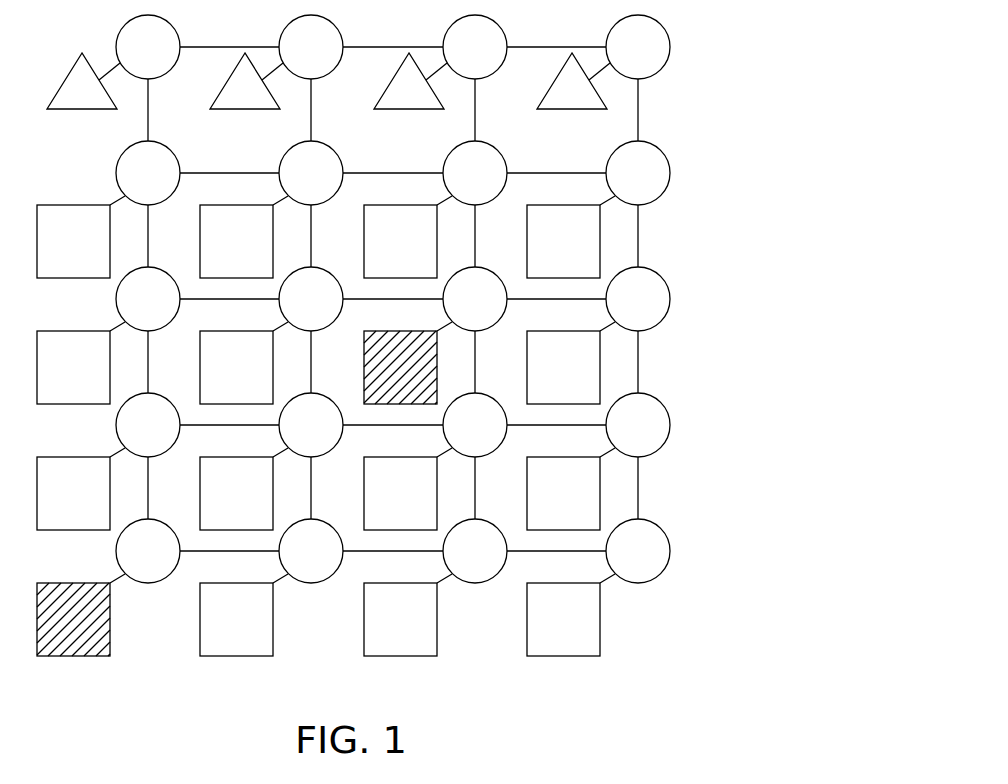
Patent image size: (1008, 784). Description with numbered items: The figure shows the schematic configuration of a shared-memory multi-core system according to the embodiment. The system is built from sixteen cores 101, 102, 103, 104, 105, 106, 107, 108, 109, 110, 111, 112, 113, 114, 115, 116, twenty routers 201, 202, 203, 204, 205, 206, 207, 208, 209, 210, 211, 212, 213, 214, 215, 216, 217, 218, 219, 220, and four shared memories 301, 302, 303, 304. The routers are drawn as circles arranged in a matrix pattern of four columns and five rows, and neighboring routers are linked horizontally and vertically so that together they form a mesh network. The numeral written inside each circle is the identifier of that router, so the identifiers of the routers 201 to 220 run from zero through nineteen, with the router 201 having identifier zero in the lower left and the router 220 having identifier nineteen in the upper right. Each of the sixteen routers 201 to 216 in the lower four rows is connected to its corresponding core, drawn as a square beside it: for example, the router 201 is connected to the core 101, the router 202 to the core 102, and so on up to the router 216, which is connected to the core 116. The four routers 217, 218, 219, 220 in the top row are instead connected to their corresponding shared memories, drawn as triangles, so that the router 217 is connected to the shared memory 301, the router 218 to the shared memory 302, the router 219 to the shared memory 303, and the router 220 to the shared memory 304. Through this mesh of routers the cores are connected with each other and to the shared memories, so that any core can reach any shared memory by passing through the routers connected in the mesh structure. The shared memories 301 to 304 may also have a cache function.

The core 101 is at (71, 656).
The core 102 is at (234, 656).
The core 103 is at (398, 656).
The core 104 is at (561, 656).
The core 105 is at (73, 457).
The core 106 is at (214, 457).
The core 107 is at (378, 457).
The core 108 is at (541, 457).
The core 109 is at (73, 331).
The core 110 is at (214, 331).
The core 111 is at (378, 331).
The core 112 is at (541, 331).
The core 113 is at (73, 205).
The core 114 is at (214, 205).
The core 115 is at (378, 205).
The core 116 is at (541, 205).
The router 201 is at (171, 574).
The router 202 is at (334, 574).
The router 203 is at (498, 574).
The router 204 is at (661, 574).
The router 205 is at (171, 448).
The router 206 is at (334, 448).
The router 207 is at (498, 448).
The router 208 is at (661, 448).
The router 209 is at (171, 322).
The router 210 is at (334, 322).
The router 211 is at (498, 322).
The router 212 is at (661, 322).
The router 213 is at (171, 196).
The router 214 is at (334, 196).
The router 215 is at (498, 196).
The router 216 is at (661, 196).
The router 217 is at (171, 70).
The router 218 is at (334, 70).
The router 219 is at (498, 70).
The router 220 is at (661, 70).
The shared memory 301 is at (82, 109).
The shared memory 302 is at (245, 109).
The shared memory 303 is at (409, 109).
The shared memory 304 is at (572, 109).